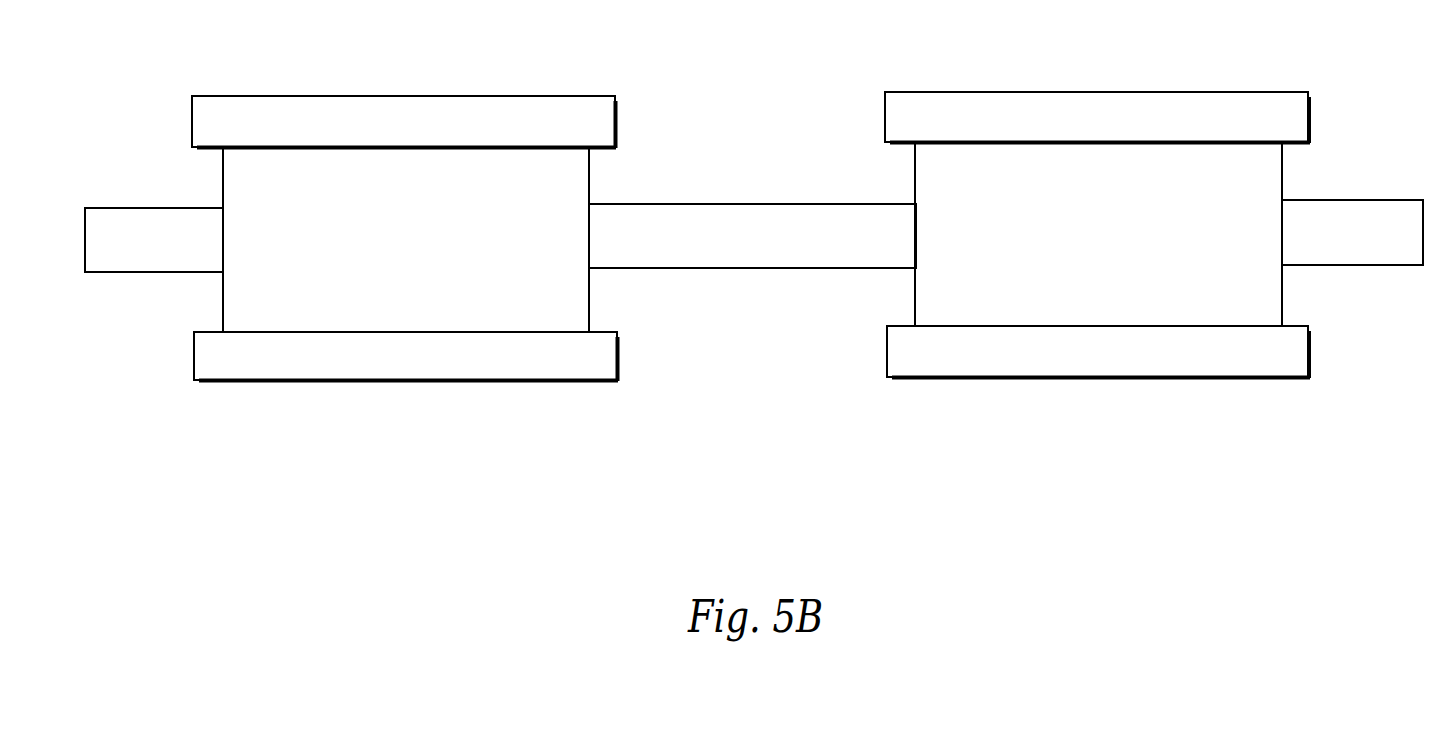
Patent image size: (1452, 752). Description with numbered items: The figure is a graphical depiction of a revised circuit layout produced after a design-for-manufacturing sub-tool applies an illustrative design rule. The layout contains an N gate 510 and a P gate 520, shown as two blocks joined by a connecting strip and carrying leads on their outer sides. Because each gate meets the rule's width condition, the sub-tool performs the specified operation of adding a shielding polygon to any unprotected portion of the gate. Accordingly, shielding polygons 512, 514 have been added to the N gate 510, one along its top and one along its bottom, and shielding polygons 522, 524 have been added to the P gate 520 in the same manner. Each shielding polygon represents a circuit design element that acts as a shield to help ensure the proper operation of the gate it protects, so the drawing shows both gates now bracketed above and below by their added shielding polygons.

The N gate 510 is at (505, 247).
The shielding polygon 512 is at (432, 96).
The shielding polygon 514 is at (407, 383).
The P gate 520 is at (1197, 244).
The shielding polygon 522 is at (1122, 92).
The shielding polygon 524 is at (1098, 379).